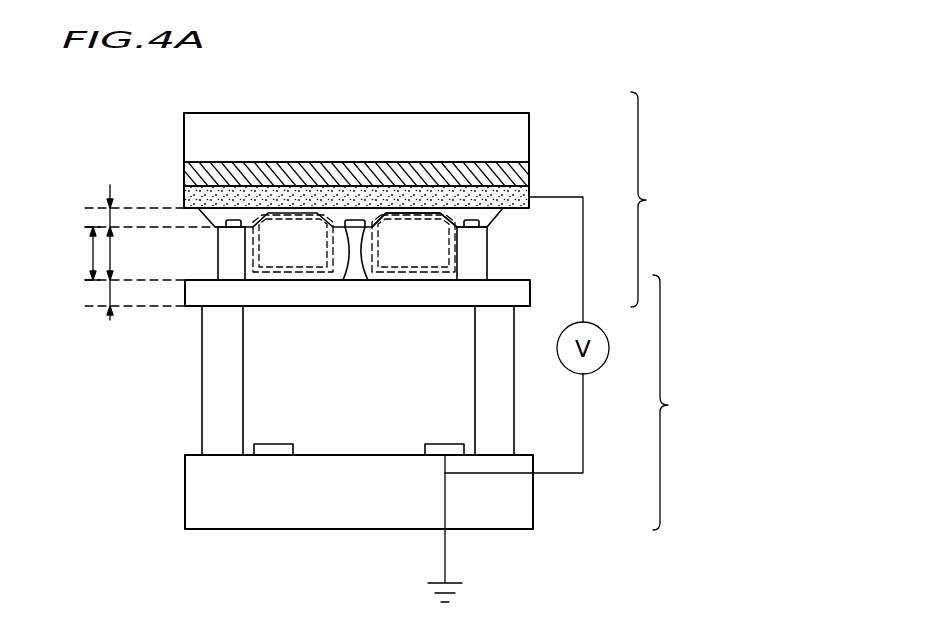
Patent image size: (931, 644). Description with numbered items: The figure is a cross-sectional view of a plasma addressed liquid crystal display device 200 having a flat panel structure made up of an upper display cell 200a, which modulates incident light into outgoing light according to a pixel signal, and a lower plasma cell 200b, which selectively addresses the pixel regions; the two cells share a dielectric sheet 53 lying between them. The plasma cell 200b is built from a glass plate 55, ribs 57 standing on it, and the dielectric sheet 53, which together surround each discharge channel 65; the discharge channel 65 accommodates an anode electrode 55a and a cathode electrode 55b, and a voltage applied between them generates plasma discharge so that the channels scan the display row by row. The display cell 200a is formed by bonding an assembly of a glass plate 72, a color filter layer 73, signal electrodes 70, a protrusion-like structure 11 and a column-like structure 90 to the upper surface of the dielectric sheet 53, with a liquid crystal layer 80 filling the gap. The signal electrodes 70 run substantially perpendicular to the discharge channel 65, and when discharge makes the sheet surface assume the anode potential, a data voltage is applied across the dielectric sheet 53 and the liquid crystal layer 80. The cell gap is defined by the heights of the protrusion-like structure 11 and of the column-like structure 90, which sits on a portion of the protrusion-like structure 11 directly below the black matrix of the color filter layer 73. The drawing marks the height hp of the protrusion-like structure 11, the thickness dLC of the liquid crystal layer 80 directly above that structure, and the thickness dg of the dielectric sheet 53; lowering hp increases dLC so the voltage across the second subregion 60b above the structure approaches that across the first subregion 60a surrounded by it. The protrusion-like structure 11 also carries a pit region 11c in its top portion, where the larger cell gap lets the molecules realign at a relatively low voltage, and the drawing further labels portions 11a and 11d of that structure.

The plasma addressed liquid crystal display device 200 is at (512, 72).
The display cell 200a is at (450, 199).
The plasma cell 200b is at (463, 402).
The glass plate 72 is at (529, 121).
The color filter layer 73 is at (529, 166).
The signal electrode 70 is at (529, 191).
The protrusion-like structure 11 is at (353, 214).
The pixel electrode portion 11a is at (404, 217).
The pit region 11c is at (359, 236).
The spacer 11d is at (346, 233).
The first subregion 60a is at (287, 212).
The second subregion 60b is at (338, 212).
The liquid crystal layer 80 is at (213, 258).
The column-like structure 90 is at (452, 253).
The dielectric sheet 53 is at (190, 306).
The rib 57 is at (212, 428).
The glass plate 55 is at (517, 505).
The anode electrode 55a is at (435, 455).
The cathode electrode 55b is at (277, 455).
The discharge channel 65 is at (352, 432).
The height of the protrusion-like structure hp is at (109, 216).
The thickness of the liquid crystal layer dLC is at (92, 255).
The thickness of the dielectric sheet dg is at (109, 297).